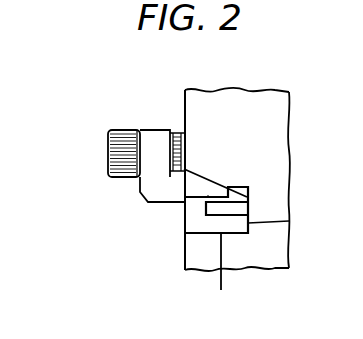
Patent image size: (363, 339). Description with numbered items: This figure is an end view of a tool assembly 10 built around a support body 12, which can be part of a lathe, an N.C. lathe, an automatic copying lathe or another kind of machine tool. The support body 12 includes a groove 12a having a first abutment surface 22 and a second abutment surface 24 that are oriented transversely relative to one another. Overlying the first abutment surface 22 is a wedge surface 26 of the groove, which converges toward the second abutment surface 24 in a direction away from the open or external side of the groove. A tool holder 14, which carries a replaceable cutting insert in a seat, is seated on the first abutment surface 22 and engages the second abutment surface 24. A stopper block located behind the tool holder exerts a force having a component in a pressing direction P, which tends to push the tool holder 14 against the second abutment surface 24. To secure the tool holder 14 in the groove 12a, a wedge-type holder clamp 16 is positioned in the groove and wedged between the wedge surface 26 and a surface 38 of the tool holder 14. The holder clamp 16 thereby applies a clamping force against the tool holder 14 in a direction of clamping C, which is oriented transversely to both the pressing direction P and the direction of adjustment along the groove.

The tool assembly 10 is at (160, 88).
The support body 12 is at (263, 113).
The groove 12a is at (247, 195).
The tool holder 14 is at (182, 223).
The holder clamp 16 is at (160, 128).
The first abutment surface 22 is at (218, 277).
The second abutment surface 24 is at (247, 220).
The wedge surface 26 is at (236, 188).
The surface of the tool holder 38 is at (208, 195).
The pressing direction P is at (97, 153).
The direction of clamping C is at (208, 82).